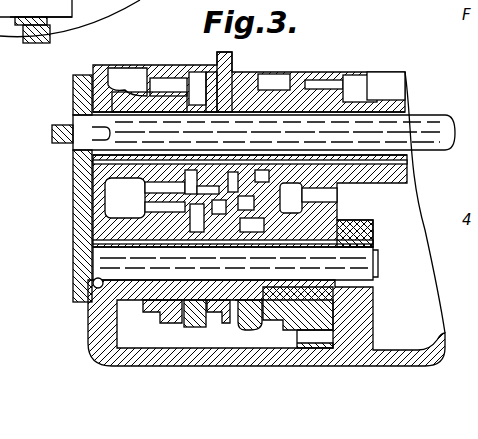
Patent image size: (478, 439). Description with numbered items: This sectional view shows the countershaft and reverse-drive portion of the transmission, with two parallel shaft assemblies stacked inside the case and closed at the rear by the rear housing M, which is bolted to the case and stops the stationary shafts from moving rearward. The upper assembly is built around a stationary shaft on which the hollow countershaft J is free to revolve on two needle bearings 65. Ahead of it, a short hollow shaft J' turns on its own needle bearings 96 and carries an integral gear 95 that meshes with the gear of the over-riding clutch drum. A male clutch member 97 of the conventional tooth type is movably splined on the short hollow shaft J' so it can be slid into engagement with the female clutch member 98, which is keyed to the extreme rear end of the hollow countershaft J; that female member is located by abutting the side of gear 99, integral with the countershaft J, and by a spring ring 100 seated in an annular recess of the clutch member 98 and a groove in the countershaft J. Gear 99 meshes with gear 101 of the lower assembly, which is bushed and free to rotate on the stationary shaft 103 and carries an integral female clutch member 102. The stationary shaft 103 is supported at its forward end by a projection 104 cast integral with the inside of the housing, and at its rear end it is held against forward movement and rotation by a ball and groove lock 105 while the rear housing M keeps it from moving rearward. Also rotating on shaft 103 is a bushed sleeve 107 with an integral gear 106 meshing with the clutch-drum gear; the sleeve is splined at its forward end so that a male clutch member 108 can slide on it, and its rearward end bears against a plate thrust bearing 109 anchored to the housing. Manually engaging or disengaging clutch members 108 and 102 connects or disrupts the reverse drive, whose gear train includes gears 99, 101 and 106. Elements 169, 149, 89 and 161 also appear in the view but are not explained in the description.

The element of adjacent figure 169 is at (34, 33).
The rear housing M is at (73, 155).
The hollow countershaft J is at (260, 82).
The short hollow shaft J' is at (180, 69).
The gear 95 is at (157, 97).
The needle bearings 96 is at (147, 98).
The male clutch member 97 is at (205, 105).
The female clutch member 98 is at (300, 100).
The gear 99 is at (342, 88).
The spring ring 100 is at (285, 92).
The pin 149 is at (226, 70).
The needle bearings 65 is at (353, 97).
The passage 89 is at (345, 190).
The gear 101 is at (345, 304).
The female clutch member 102 is at (270, 330).
The stationary shaft 103 is at (357, 270).
The projection 104 is at (365, 235).
The ball and groove lock 105 is at (92, 284).
The gear 106 is at (158, 318).
The sleeve 107 is at (240, 310).
The male clutch member 108 is at (215, 318).
The plate thrust bearing 109 is at (97, 307).
The spring 161 is at (192, 322).